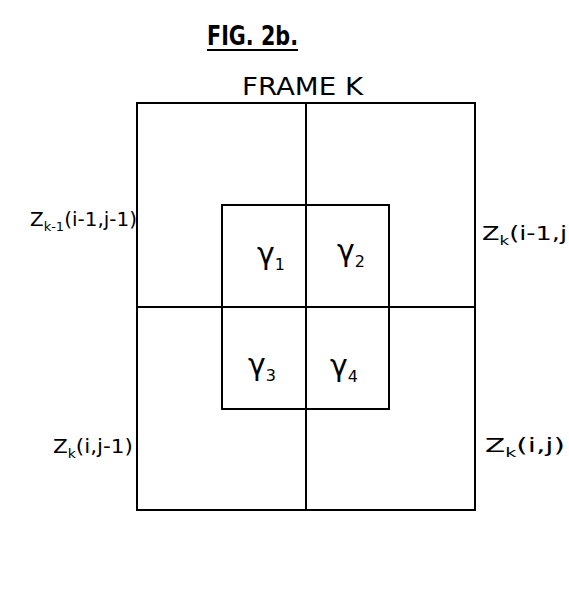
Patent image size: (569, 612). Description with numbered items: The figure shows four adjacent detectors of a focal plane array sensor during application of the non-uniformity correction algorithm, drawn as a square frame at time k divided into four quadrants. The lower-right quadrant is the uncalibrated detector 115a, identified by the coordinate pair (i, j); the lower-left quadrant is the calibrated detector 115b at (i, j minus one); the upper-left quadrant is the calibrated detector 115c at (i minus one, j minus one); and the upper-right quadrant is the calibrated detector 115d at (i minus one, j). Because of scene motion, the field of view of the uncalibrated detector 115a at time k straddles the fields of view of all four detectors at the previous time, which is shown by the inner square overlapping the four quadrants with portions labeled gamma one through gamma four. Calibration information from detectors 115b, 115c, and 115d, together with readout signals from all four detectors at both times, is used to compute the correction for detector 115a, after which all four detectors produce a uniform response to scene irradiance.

The detector 115a is at (476, 379).
The detector 115b is at (137, 379).
The detector 115c is at (136, 162).
The detector 115d is at (476, 172).